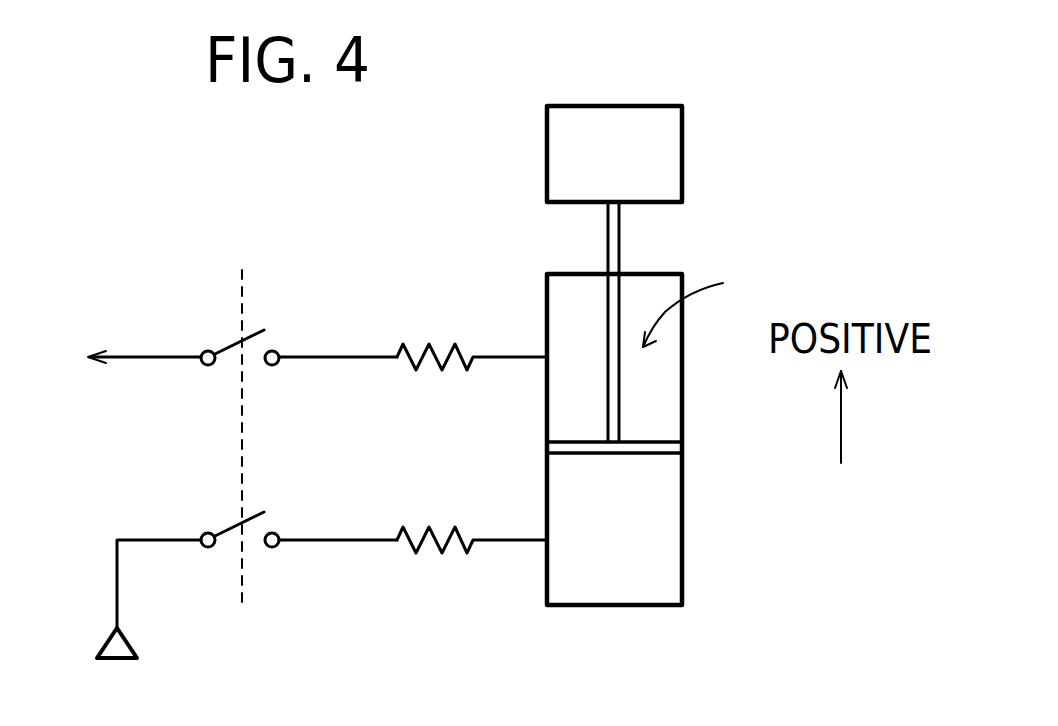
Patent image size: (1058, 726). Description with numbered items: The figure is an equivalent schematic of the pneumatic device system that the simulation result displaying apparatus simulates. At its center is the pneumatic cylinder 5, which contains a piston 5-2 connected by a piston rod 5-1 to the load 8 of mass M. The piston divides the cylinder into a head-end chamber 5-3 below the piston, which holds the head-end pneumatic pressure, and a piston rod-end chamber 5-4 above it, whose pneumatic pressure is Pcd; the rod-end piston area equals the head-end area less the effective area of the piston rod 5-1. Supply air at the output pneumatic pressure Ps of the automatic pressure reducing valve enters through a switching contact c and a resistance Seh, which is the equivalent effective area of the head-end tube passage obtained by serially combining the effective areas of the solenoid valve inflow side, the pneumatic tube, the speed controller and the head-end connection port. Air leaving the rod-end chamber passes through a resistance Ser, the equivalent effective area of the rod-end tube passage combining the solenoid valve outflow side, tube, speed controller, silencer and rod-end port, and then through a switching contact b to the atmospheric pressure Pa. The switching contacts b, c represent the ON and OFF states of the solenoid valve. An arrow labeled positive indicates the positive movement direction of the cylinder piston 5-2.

The load 8 is at (684, 159).
The pneumatic cylinder 5 is at (684, 366).
The piston rod 5-1 is at (605, 243).
The piston 5-2 is at (655, 445).
The head-end chamber 5-3 is at (566, 584).
The piston rod-end chamber 5-4 is at (566, 408).
The switching contact b is at (220, 341).
The switching contact c is at (220, 525).
The equivalent effective area of the cylinder rod-end tube passage Ser is at (439, 346).
The equivalent effective area of the cylinder head-end tube passage Seh is at (439, 530).
The atmospheric pressure Pa is at (114, 356).
The output pneumatic pressure Ps is at (149, 622).
The pneumatic pressure in the piston rod-end chamber Pcd is at (717, 306).